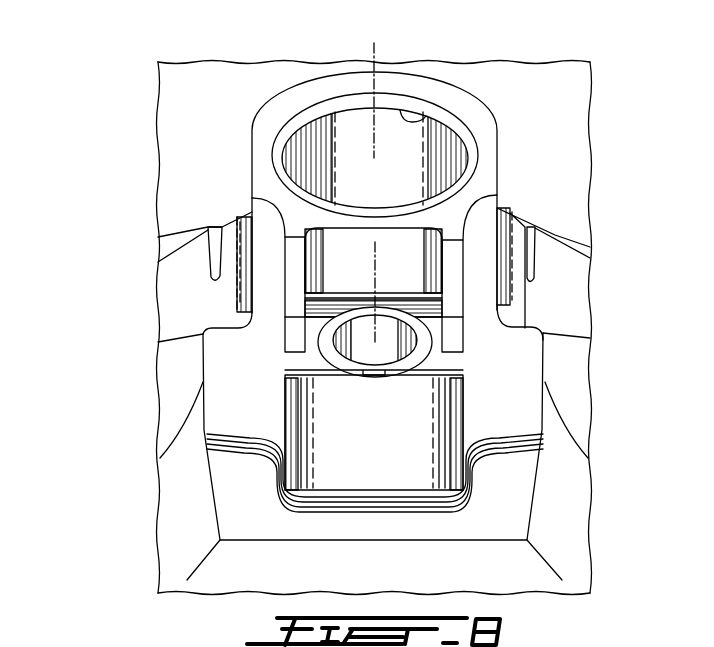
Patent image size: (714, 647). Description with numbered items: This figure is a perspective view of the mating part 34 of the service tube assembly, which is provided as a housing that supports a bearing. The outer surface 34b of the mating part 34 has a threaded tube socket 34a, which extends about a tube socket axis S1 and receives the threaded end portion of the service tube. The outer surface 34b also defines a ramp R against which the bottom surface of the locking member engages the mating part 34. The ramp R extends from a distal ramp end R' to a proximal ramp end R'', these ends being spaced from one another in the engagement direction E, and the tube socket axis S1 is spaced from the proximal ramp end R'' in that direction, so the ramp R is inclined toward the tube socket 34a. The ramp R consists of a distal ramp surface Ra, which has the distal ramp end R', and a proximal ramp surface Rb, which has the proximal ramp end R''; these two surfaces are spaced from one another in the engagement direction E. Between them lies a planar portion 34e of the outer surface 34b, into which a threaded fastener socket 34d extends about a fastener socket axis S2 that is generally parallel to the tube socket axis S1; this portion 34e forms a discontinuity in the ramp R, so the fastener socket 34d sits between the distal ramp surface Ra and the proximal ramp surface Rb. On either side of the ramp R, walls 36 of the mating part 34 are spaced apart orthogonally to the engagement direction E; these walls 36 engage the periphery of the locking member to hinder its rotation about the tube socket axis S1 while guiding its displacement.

The mating part 34 is at (108, 104).
The tube socket 34a is at (427, 120).
The outer surface 34b is at (490, 163).
The fastener socket 34d is at (412, 346).
The portion of the outer housing surface 34e is at (428, 367).
The walls 36 is at (438, 306).
The tube socket axis S1 is at (373, 148).
The fastener socket axis S2 is at (373, 252).
The ramp R is at (373, 497).
The distal ramp end R' is at (514, 410).
The proximal ramp end R'' is at (524, 261).
The distal ramp surface Ra is at (338, 382).
The proximal ramp surface Rb is at (337, 293).
The engagement direction E is at (375, 567).